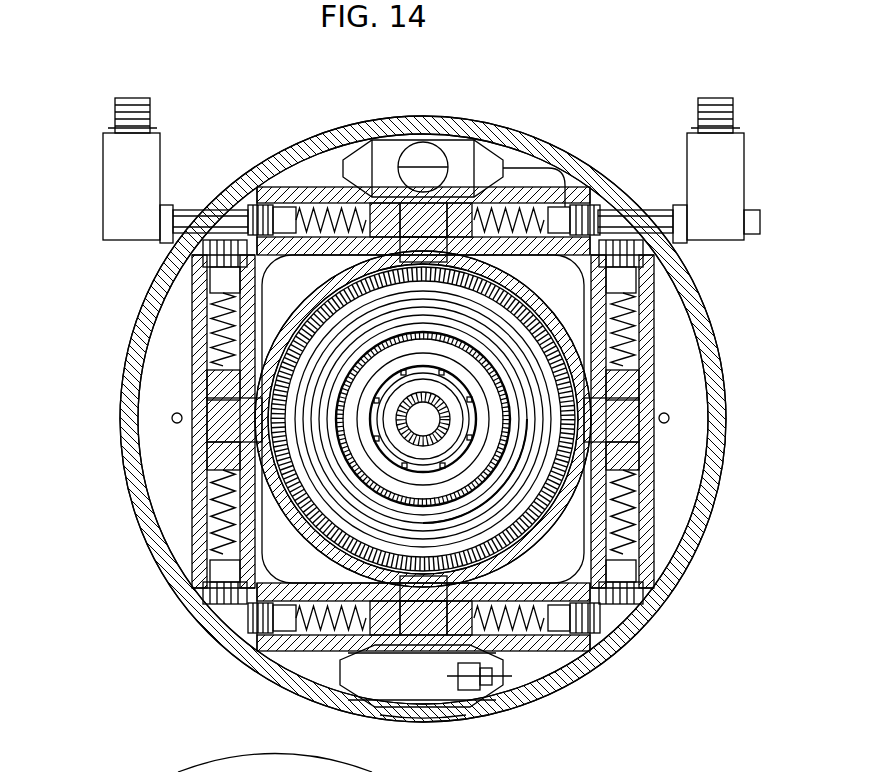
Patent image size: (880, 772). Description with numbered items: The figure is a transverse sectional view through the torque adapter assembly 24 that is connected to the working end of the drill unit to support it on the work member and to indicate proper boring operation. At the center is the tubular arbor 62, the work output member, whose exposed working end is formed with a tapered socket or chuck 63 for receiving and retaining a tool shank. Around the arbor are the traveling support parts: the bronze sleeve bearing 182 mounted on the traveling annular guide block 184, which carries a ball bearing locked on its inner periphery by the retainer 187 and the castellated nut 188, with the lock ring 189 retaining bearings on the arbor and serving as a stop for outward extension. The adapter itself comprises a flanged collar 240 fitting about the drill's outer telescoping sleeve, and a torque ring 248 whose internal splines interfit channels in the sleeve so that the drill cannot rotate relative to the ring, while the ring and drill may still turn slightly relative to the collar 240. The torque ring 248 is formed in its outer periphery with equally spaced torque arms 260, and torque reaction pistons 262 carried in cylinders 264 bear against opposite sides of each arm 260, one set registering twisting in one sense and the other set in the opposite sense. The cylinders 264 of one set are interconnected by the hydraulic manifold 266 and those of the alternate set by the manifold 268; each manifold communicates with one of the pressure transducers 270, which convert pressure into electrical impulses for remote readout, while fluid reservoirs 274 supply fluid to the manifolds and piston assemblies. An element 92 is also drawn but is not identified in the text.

The torque adapter assembly 24 is at (507, 121).
The tubular arbor 62 is at (470, 428).
The tapered socket or chuck 63 is at (440, 385).
The drum 92 is at (263, 763).
The sleeve bearing 182 is at (512, 300).
The traveling annular guide block 184 is at (516, 546).
The retainer 187 is at (384, 341).
The castellated nut 188 is at (470, 396).
The lock ring 189 is at (515, 546).
The flanged collar 240 is at (452, 716).
The torque ring 248 is at (320, 526).
The torque arm 260 is at (428, 262).
The torque reaction piston 262 is at (336, 205).
The cylinder 264 is at (259, 173).
The hydraulic manifold 266 is at (546, 176).
The manifold 268 is at (500, 692).
The pressure transducer 270 is at (105, 162).
The fluid reservoir 274 is at (383, 152).